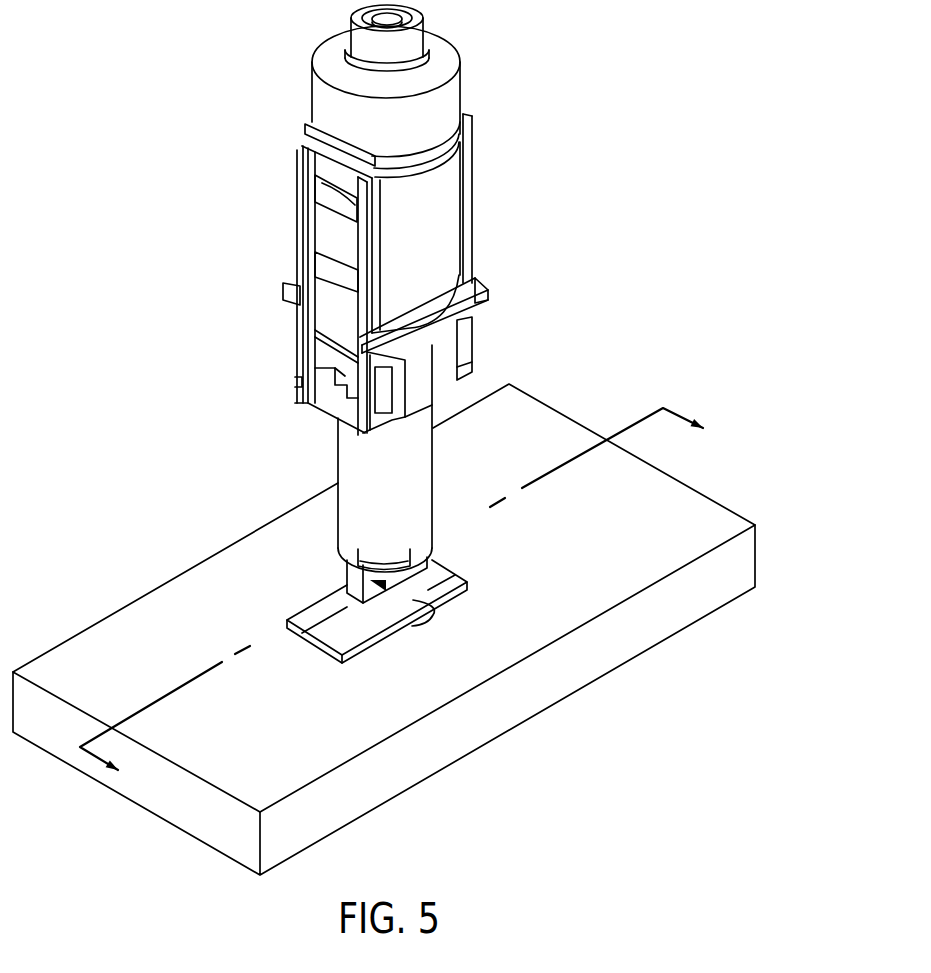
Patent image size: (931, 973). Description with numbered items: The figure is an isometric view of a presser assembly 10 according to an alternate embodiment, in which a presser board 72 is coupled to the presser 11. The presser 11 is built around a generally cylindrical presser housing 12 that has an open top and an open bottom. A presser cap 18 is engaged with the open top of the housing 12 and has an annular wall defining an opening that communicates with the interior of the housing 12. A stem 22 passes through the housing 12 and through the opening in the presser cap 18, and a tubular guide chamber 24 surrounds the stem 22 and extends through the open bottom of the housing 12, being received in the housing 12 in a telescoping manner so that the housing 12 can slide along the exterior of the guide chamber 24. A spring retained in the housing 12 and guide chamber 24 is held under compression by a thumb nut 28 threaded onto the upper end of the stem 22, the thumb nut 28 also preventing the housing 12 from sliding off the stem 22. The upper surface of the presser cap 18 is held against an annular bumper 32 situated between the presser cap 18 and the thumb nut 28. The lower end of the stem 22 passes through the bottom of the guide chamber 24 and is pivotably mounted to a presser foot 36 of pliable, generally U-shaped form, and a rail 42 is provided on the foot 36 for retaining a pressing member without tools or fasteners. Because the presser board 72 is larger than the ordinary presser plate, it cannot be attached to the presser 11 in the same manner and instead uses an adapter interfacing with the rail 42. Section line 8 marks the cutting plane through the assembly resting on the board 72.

The section line 8- 8 is at (381, 576).
The presser assembly 10 is at (160, 88).
The presser 11 is at (549, 274).
The presser housing 12 is at (440, 218).
The presser cap 18 is at (437, 134).
The stem 22 is at (356, 581).
The guide chamber 24 is at (360, 460).
The thumb nut 28 is at (452, 93).
The annular bumper 32 is at (367, 178).
The presser foot 36 is at (332, 627).
The rail 42 is at (409, 624).
The presser board 72 is at (530, 688).